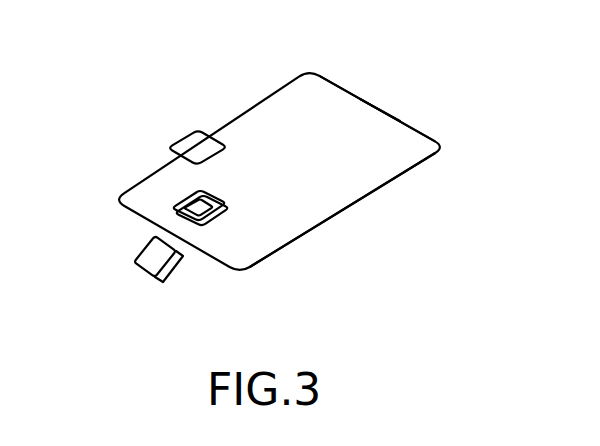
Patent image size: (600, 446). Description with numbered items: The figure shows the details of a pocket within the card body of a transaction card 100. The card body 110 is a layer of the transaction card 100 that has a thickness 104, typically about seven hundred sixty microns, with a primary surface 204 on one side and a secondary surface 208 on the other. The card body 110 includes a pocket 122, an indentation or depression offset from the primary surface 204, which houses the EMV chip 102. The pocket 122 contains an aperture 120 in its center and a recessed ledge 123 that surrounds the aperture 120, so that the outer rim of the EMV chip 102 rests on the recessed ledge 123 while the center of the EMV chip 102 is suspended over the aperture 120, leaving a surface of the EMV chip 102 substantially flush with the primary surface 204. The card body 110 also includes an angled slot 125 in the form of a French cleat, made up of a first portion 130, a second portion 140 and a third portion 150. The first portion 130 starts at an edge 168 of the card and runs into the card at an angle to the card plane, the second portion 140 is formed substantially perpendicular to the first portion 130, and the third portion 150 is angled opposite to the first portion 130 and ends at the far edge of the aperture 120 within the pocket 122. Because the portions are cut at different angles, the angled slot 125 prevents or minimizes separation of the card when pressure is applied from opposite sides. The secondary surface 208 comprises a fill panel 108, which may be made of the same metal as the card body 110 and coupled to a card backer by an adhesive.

The transaction card 100 is at (123, 115).
The EMV chip 102 is at (185, 138).
The thickness 104 is at (440, 117).
The fill panel 108 is at (136, 263).
The card body 110 is at (378, 108).
The aperture 120 is at (213, 204).
The pocket 122 is at (176, 206).
The recessed ledge 123 is at (215, 213).
The angled slot 125 is at (151, 231).
The first portion 130 is at (180, 250).
The second portion 140 is at (200, 238).
The third portion 150 is at (213, 224).
The edge 168 is at (152, 231).
The primary surface 204 is at (337, 108).
The secondary surface 208 is at (345, 208).